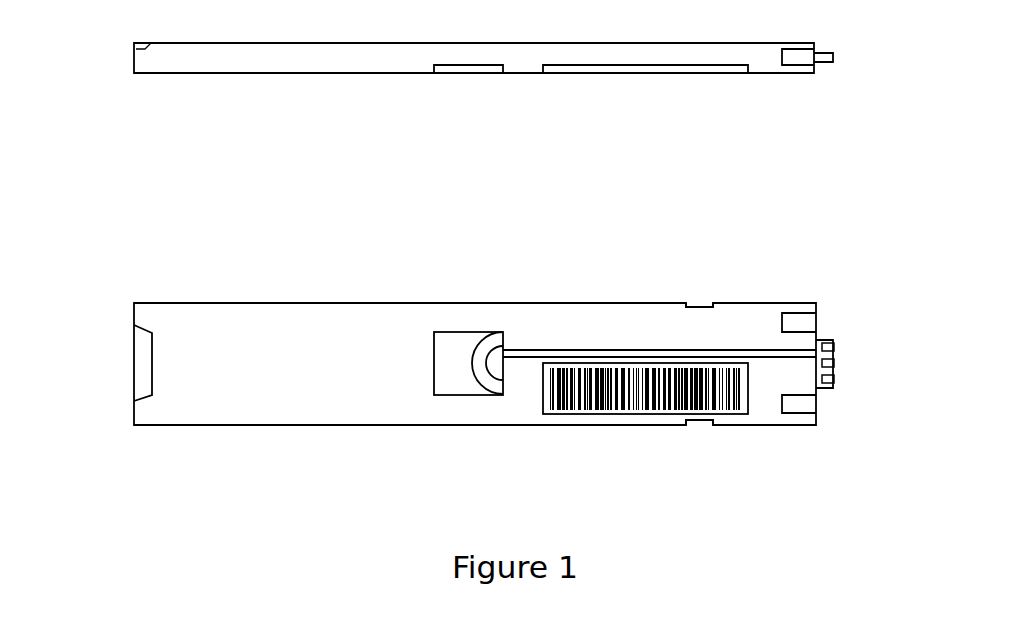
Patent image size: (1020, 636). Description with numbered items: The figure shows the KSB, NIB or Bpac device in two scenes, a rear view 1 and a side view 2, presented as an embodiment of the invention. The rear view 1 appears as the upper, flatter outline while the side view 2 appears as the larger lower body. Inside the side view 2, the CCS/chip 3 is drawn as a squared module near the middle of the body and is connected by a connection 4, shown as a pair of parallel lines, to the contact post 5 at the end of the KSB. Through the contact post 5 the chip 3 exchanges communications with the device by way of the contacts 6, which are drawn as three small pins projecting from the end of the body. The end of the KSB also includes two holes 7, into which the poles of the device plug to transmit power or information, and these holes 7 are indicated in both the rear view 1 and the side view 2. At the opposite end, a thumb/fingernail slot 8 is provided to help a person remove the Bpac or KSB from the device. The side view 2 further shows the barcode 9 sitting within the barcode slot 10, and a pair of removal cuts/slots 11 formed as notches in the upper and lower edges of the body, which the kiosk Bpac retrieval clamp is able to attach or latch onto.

The rear view 1 is at (151, 417).
The side view 2 is at (326, 74).
The CCS/chip 3 is at (462, 74).
The connection 4 is at (604, 74).
The contact post 5 is at (834, 57).
The contacts 6 is at (835, 347).
The holes 7 is at (811, 65).
The thumb/fingernail slot 8 is at (143, 343).
The barcode 9 is at (605, 415).
The barcode slot 10 is at (603, 74).
The removal cuts/slots 11 is at (714, 309).